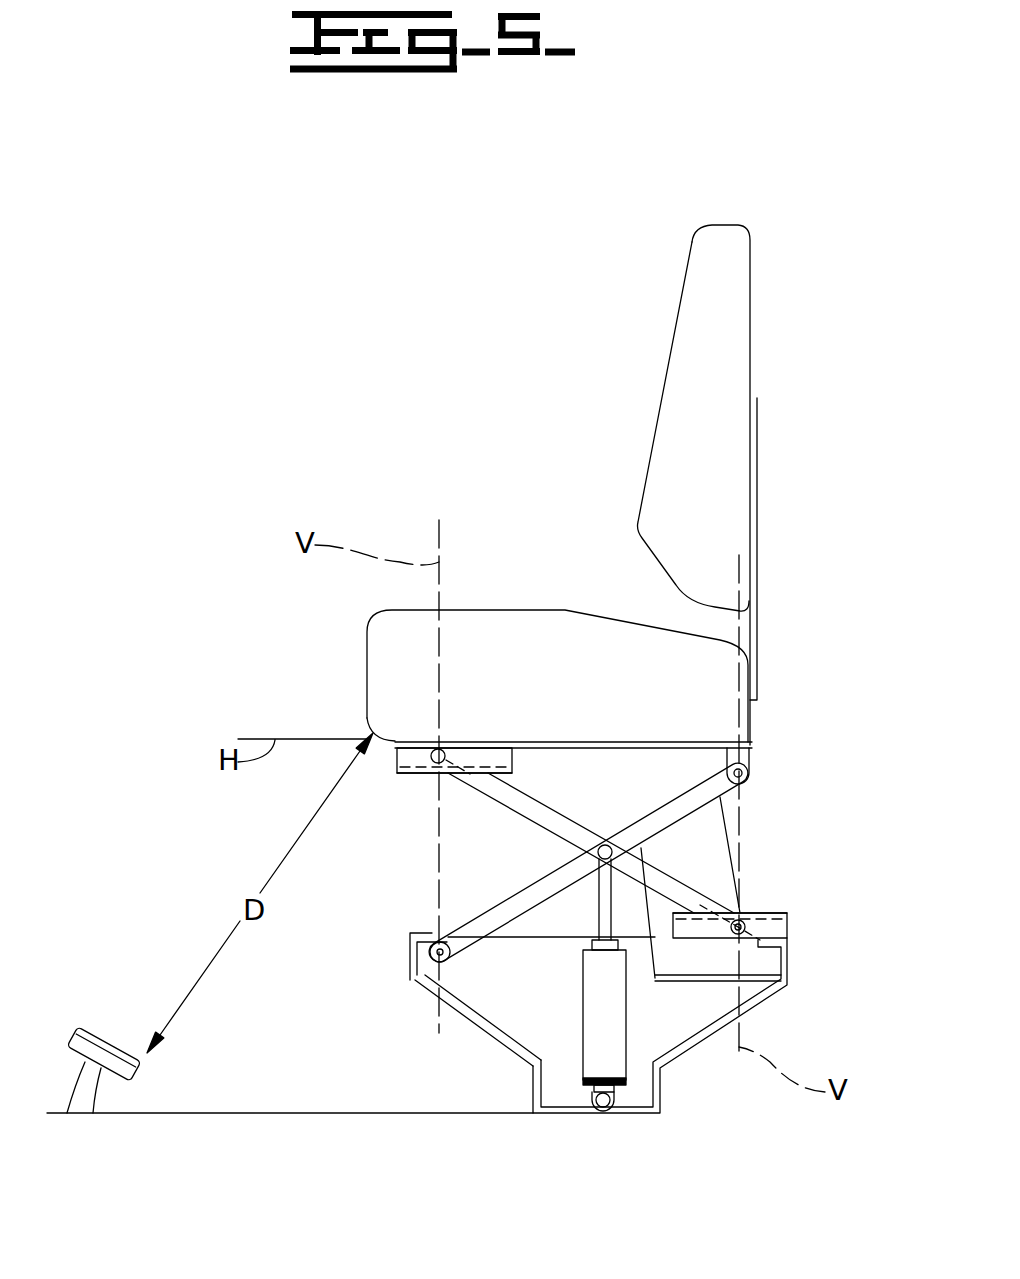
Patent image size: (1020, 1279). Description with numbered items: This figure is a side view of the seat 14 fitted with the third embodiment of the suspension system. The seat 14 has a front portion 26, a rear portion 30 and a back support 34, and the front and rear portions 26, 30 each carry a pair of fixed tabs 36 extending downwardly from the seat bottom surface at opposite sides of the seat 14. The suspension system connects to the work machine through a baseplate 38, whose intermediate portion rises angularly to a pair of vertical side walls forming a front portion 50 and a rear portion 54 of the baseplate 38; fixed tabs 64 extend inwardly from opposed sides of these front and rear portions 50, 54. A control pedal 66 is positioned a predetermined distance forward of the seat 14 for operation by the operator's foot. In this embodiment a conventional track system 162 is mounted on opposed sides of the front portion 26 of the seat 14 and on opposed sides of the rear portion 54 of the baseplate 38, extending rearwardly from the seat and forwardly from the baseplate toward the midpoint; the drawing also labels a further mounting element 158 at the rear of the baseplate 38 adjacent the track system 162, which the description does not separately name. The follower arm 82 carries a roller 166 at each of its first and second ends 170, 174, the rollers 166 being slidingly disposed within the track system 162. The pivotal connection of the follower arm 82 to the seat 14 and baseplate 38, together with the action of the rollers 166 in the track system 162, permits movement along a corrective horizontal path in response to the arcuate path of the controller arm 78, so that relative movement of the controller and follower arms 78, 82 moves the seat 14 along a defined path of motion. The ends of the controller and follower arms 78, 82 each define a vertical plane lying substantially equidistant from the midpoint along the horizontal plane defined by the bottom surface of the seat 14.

The seat 14 is at (570, 687).
The front portion 26 is at (400, 720).
The rear portion 30 is at (742, 732).
The back support 34 is at (717, 337).
The fixed tabs 36 is at (743, 760).
The baseplate 38 is at (653, 1020).
The front portion of the baseplate 50 is at (410, 957).
The rear portion of the baseplate 54 is at (787, 963).
The fixed tabs 64 is at (427, 968).
The control pedal 66 is at (101, 1038).
The controller arm 78 is at (673, 815).
The follower arm 82 is at (572, 828).
The slide bracket 158 is at (787, 937).
The track system 162 is at (382, 776).
The roller 166 is at (447, 747).
The first end 170 is at (478, 790).
The second end 174 is at (740, 912).